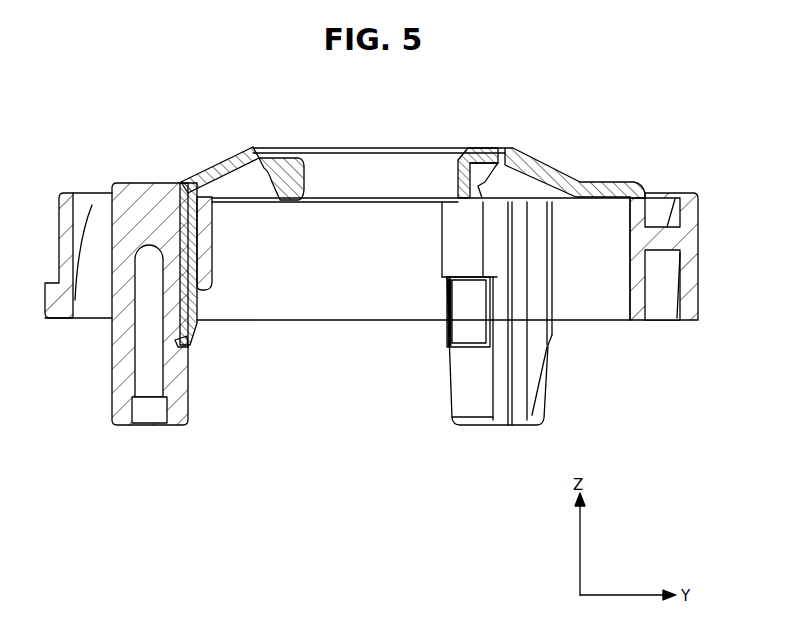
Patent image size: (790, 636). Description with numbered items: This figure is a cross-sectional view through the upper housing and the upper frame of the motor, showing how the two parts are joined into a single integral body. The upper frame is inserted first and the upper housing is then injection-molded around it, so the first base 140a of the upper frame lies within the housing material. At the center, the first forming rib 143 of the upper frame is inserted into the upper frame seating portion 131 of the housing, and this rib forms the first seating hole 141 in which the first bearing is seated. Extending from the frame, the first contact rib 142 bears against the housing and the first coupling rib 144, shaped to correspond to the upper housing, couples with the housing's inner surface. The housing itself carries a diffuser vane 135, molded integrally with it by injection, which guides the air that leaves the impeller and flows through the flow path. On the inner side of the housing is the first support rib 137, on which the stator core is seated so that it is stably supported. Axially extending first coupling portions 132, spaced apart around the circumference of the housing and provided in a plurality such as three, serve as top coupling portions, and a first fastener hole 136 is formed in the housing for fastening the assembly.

The upper frame seating portion 131 is at (467, 180).
The first coupling portion 132 is at (120, 380).
The diffuser vane 135 is at (98, 226).
The first fastener hole 136 is at (138, 330).
The first support rib 137 is at (212, 287).
The first base 140a is at (277, 152).
The first seating hole 141 is at (368, 172).
The first contact rib 142 is at (192, 323).
The first forming rib 143 is at (295, 162).
The first coupling rib 144 is at (188, 345).